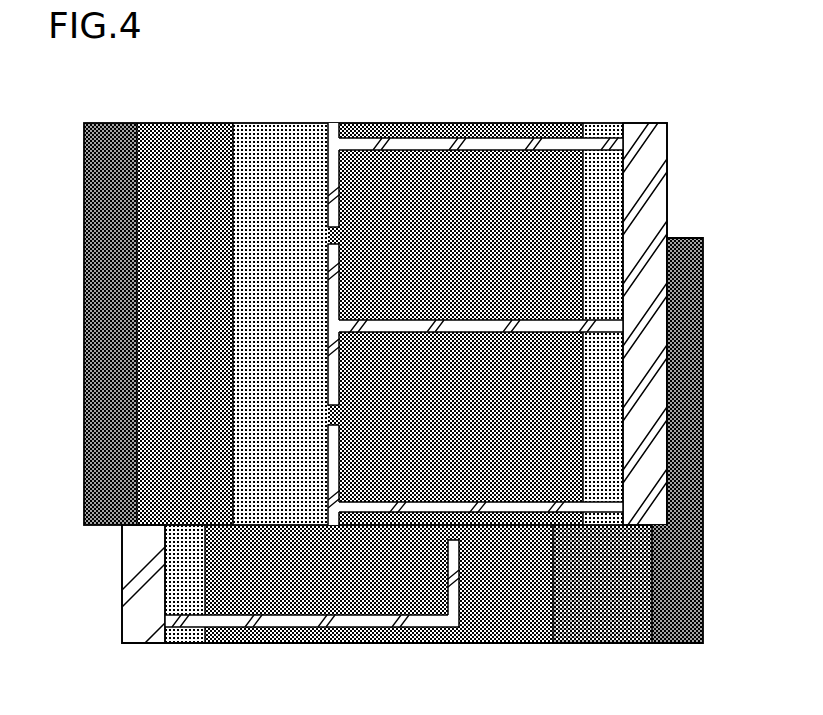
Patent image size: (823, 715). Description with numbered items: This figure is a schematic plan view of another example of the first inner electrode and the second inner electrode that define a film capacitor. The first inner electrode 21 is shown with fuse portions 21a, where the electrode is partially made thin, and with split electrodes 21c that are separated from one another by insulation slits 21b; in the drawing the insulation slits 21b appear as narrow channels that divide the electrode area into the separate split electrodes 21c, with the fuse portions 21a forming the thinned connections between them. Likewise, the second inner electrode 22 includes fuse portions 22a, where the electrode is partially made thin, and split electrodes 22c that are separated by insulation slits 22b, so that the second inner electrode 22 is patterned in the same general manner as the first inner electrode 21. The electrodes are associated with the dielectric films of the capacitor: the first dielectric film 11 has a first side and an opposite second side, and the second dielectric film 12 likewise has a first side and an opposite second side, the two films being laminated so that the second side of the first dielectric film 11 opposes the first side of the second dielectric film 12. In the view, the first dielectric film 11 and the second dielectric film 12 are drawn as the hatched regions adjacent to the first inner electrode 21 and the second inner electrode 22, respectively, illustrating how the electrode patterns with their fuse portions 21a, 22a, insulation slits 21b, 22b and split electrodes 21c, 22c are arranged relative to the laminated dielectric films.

The first dielectric film 11 is at (659, 198).
The second dielectric film 12 is at (130, 574).
The first inner electrode 21 is at (166, 118).
The fuse portions 21a is at (332, 232).
The insulation slits 21b is at (420, 146).
The split electrodes 21c is at (469, 195).
The second inner electrode 22 is at (637, 653).
The fuse portions 22a is at (453, 540).
The insulation slits 22b is at (398, 622).
The split electrodes 22c is at (334, 605).